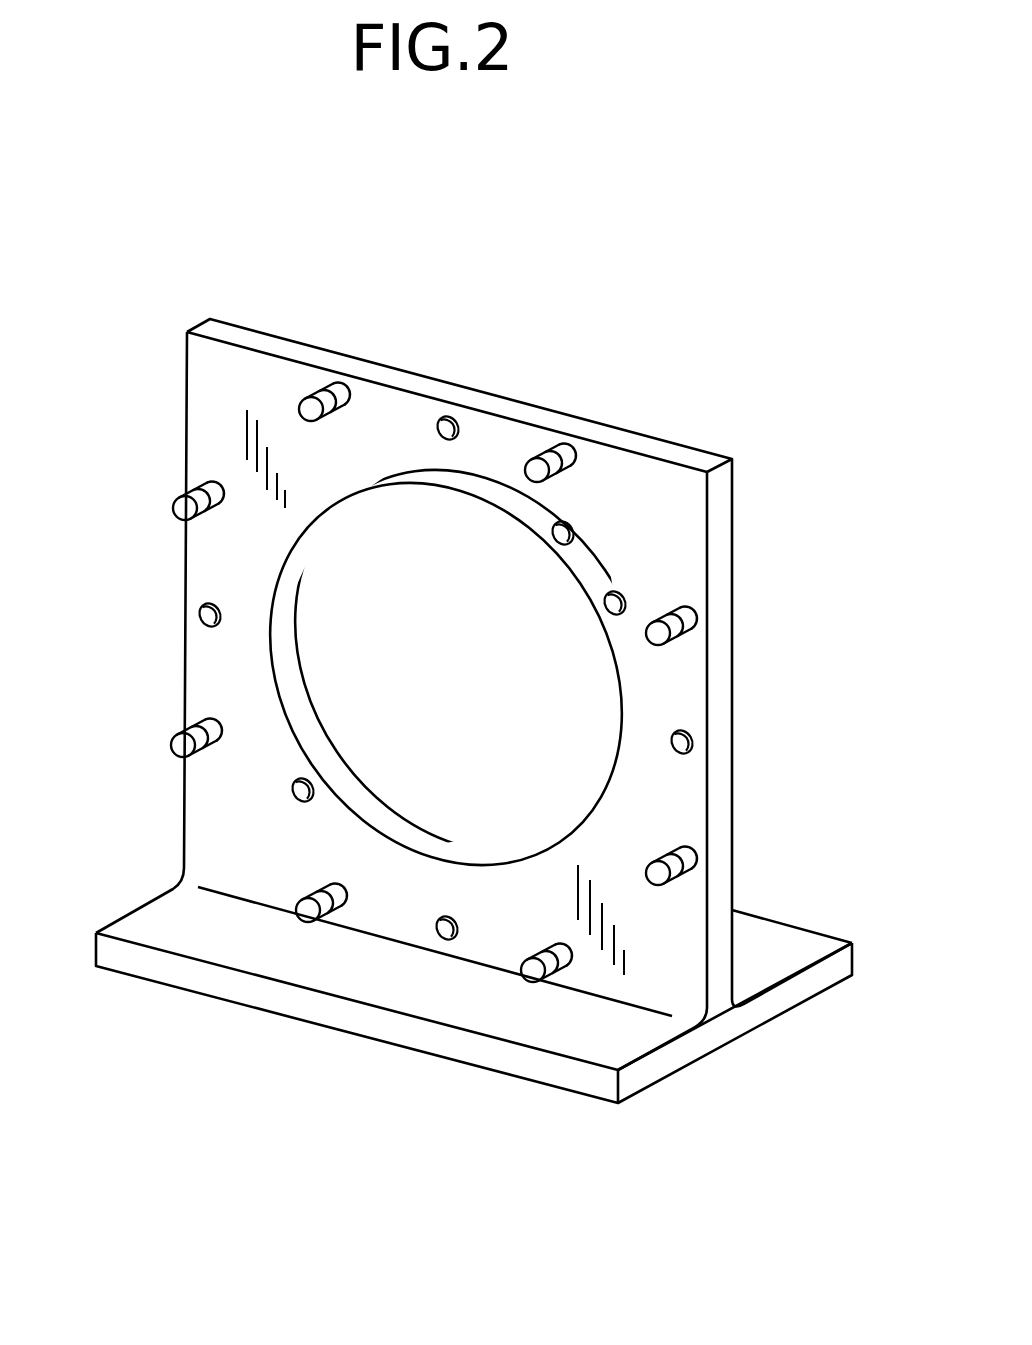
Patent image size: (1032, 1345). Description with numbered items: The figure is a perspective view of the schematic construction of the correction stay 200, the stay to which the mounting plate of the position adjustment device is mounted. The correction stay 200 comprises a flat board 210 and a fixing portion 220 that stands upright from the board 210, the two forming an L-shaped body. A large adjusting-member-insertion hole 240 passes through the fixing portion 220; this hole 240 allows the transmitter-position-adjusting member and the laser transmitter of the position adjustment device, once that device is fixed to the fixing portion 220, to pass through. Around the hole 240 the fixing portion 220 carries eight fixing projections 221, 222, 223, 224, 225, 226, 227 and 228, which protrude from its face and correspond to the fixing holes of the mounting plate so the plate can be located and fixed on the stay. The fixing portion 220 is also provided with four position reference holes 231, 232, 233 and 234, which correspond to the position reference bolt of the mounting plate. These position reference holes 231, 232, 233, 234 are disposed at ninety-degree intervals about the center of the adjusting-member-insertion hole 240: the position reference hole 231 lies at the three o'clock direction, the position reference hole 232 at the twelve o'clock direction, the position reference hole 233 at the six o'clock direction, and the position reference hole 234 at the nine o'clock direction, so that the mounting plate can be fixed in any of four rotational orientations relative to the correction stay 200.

The correction stay 200 is at (759, 315).
The board 210 is at (555, 1067).
The fixing portion 220 is at (663, 955).
The fixing projection 221 is at (687, 866).
The fixing projection 222 is at (682, 622).
The fixing projection 223 is at (553, 455).
The fixing projection 224 is at (313, 396).
The fixing projection 225 is at (187, 508).
The fixing projection 226 is at (183, 747).
The fixing projection 227 is at (305, 912).
The fixing projection 228 is at (530, 976).
The position reference hole 231 is at (690, 737).
The position reference hole 232 is at (443, 418).
The position reference hole 233 is at (207, 618).
The position reference hole 234 is at (440, 933).
The adjusting-member-insertion hole 240 is at (547, 745).